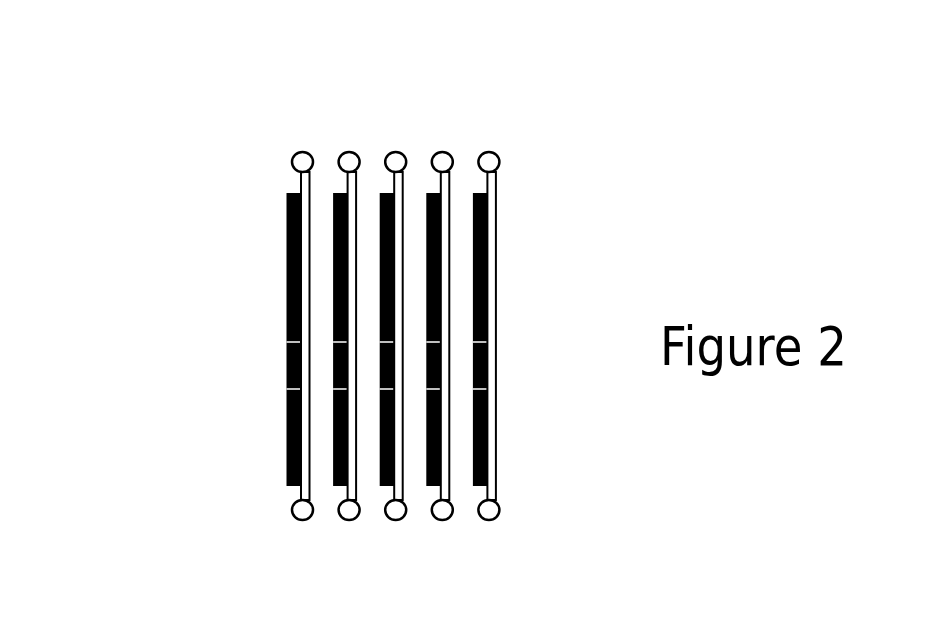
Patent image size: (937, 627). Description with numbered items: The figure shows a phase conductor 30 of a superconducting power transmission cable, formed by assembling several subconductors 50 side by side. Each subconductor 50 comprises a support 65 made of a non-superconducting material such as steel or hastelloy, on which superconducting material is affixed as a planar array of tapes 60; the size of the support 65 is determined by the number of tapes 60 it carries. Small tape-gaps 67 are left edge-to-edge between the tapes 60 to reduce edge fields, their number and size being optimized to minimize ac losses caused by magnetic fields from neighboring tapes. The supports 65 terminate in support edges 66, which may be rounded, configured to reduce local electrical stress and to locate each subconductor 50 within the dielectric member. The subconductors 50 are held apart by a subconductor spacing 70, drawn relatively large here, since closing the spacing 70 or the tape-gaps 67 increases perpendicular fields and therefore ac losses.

The conductor 30 is at (561, 250).
The subconductor 50 is at (258, 232).
The tape 60 is at (288, 468).
The support 65 is at (297, 183).
The support edge 66 is at (485, 511).
The tape-gap 67 is at (288, 288).
The subconductor spacing 70 is at (329, 188).